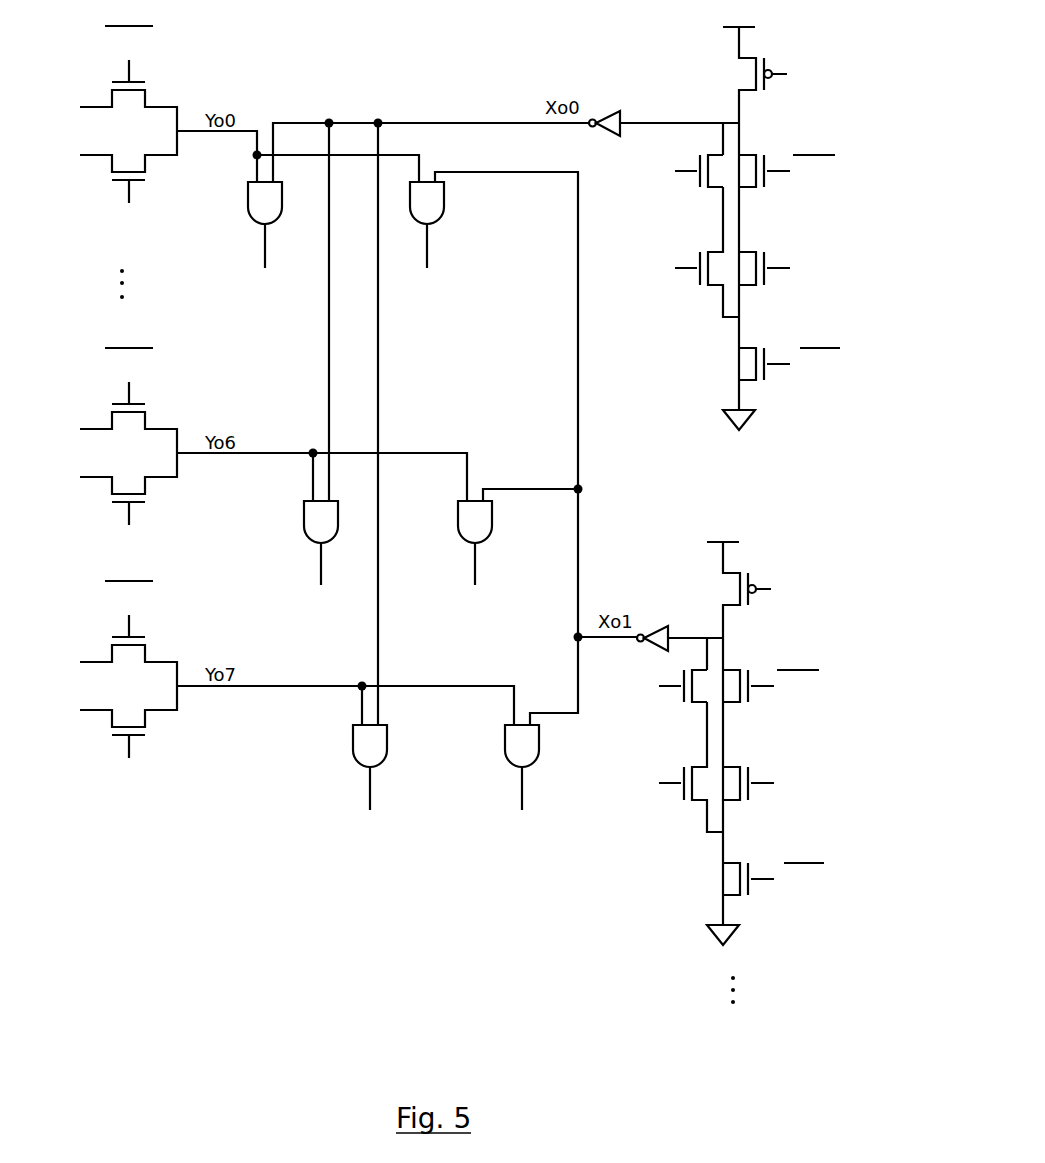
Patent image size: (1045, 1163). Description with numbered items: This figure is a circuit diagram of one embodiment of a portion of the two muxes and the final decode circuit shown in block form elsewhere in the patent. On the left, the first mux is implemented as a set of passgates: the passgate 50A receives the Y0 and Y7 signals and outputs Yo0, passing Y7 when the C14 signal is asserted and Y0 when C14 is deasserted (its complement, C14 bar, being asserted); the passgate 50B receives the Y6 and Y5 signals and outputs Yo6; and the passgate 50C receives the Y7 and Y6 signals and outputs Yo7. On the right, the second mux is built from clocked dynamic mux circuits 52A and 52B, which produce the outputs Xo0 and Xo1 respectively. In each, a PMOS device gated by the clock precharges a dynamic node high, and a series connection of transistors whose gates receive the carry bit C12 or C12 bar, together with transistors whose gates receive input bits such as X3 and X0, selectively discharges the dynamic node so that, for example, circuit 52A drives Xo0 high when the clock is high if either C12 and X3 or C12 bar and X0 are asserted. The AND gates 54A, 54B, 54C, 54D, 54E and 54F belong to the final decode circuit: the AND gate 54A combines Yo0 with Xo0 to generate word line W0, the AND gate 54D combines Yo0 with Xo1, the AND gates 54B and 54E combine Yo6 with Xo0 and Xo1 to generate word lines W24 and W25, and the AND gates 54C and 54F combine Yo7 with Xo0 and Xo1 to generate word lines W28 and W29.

The passgate 50A is at (168, 177).
The passgate 50B is at (173, 507).
The passgate 50C is at (185, 756).
The clocked dynamic mux circuit 52A is at (718, 337).
The clocked dynamic mux circuit 52B is at (675, 855).
The AND gate 54A is at (248, 215).
The AND gate 54B is at (304, 523).
The AND gate 54C is at (353, 748).
The AND gate 54D is at (444, 205).
The AND gate 54E is at (458, 527).
The AND gate 54F is at (515, 752).